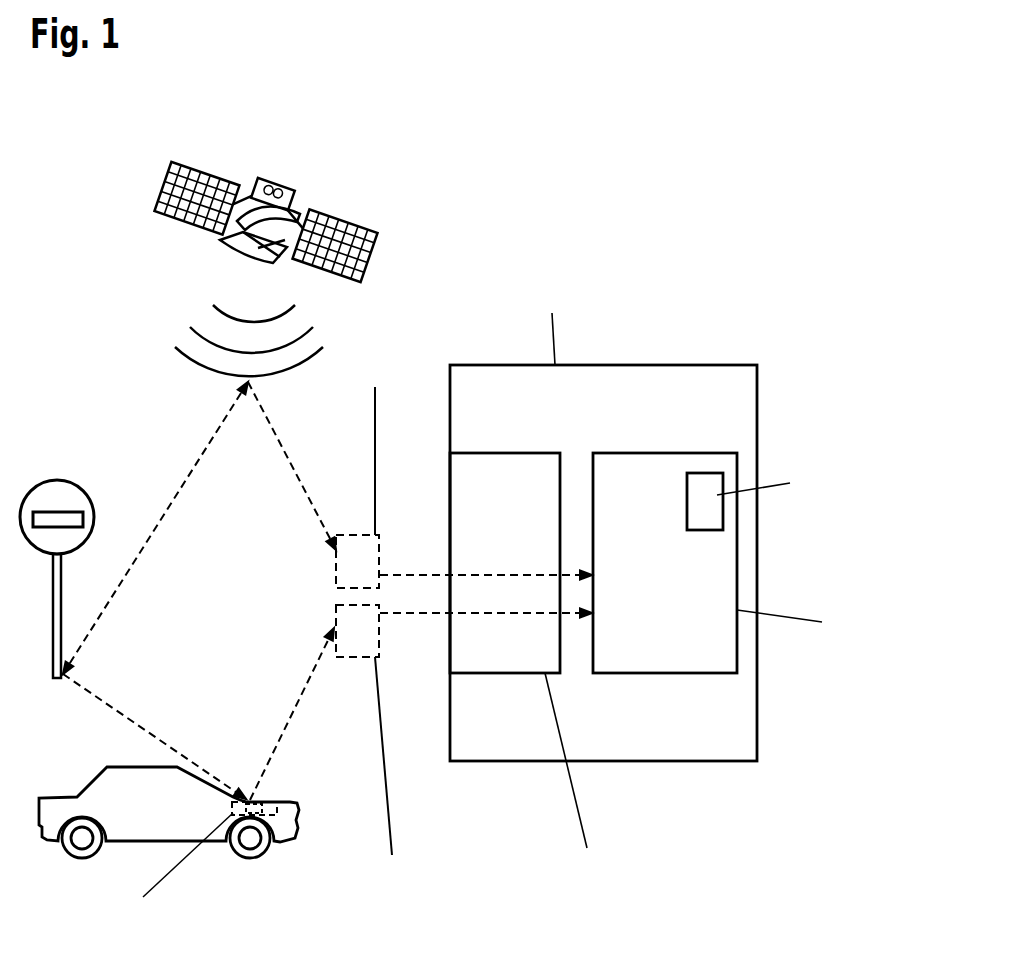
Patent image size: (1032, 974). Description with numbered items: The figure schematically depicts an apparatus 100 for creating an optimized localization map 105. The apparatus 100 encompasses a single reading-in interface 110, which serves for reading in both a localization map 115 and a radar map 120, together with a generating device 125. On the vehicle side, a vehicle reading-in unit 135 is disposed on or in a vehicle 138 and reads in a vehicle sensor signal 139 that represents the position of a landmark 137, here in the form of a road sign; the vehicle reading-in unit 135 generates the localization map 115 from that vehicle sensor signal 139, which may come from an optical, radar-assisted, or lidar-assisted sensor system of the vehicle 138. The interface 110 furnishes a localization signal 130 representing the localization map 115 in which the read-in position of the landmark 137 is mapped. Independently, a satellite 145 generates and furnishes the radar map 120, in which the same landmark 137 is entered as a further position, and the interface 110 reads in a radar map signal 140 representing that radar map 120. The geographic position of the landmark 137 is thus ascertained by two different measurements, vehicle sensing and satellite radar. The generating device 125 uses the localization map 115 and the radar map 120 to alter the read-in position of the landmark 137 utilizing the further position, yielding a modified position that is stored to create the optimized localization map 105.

The apparatus 100 is at (630, 332).
The optimized localization map 105 is at (704, 473).
The interface 110 is at (503, 673).
The localization map 115 is at (355, 657).
The radar map 120 is at (355, 535).
The generating device 125 is at (665, 673).
The localization signal 130 is at (418, 613).
The vehicle reading-in unit 135 is at (300, 803).
The landmark 137 is at (58, 480).
The vehicle 138 is at (294, 871).
The vehicle sensor signal 139 is at (110, 705).
The radar map signal 140 is at (418, 575).
The satellite 145 is at (358, 193).